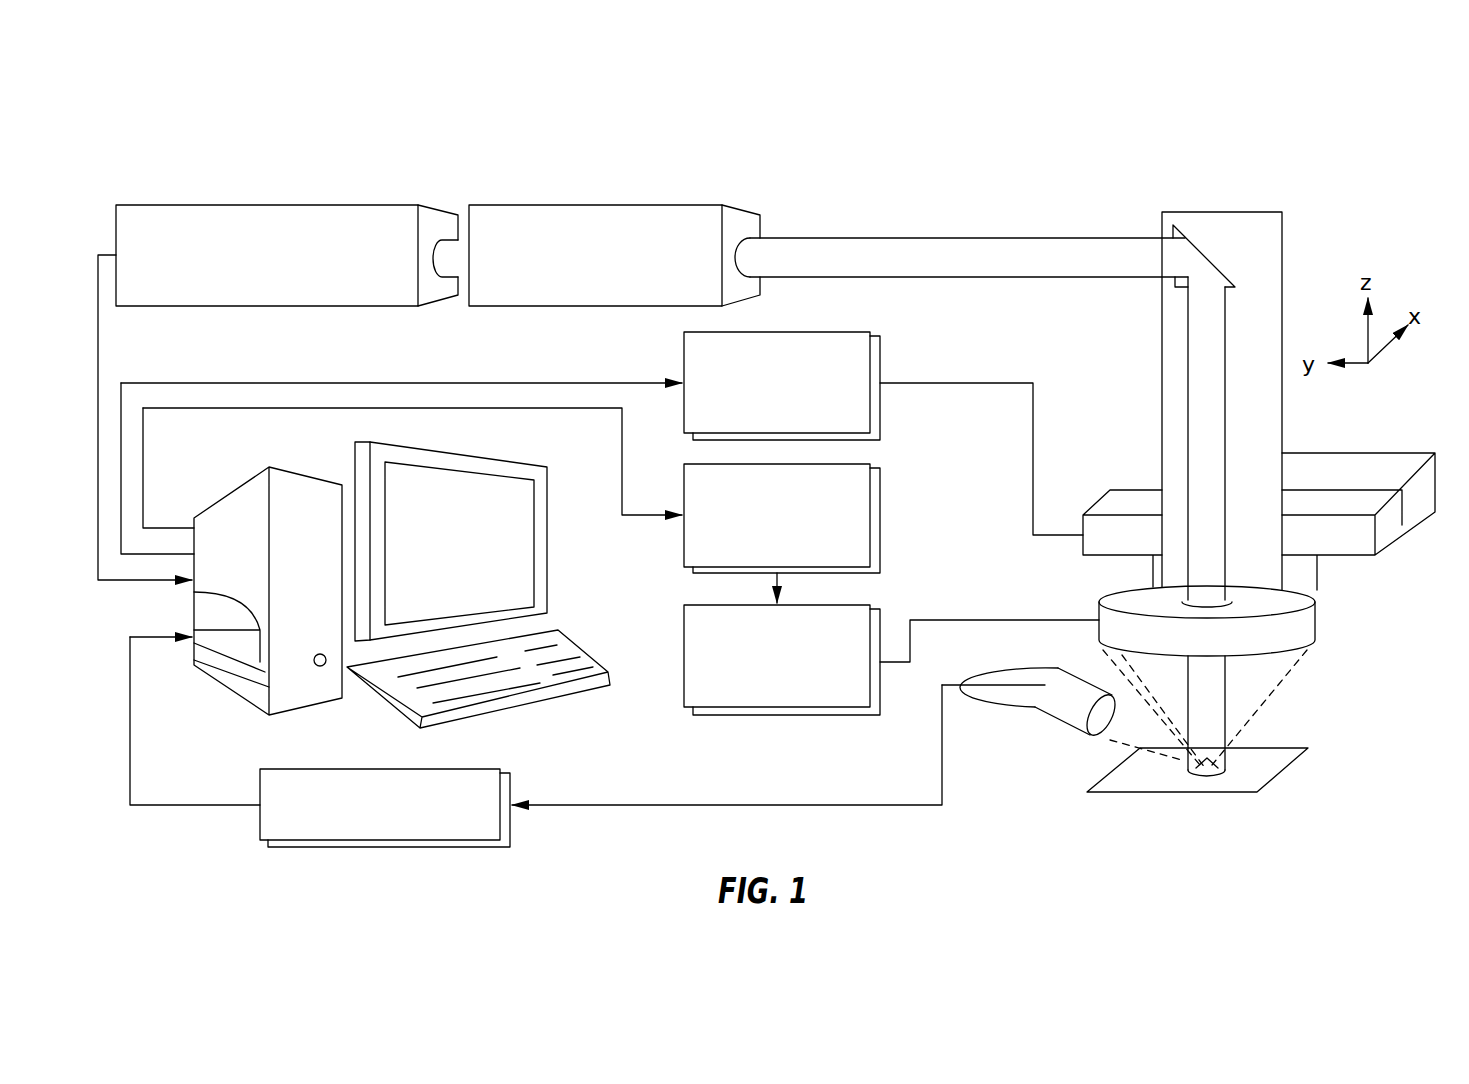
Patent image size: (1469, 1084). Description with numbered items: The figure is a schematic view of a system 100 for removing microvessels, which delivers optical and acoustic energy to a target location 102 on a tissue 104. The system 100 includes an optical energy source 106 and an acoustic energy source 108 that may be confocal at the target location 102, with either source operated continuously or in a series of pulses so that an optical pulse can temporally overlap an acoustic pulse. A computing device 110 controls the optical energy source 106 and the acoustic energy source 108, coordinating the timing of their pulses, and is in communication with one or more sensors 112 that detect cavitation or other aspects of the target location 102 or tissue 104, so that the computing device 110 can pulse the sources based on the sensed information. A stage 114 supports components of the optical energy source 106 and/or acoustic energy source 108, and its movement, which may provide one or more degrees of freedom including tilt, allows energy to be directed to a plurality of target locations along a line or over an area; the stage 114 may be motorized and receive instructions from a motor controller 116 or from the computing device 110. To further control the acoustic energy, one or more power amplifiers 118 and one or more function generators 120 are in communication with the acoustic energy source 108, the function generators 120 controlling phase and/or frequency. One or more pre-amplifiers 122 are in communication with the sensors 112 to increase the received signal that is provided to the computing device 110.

The system for removing microvessels 100 is at (1400, 148).
The target location 102 is at (1212, 772).
The tissue 104 is at (1128, 794).
The optical energy source 106 is at (287, 272).
The acoustic energy source 108 is at (1317, 620).
The computing device 110 is at (249, 565).
The sensor 112 is at (1063, 708).
The stage 114 is at (1337, 505).
The motor controller 116 is at (797, 400).
The power amplifier 118 is at (797, 672).
The function generator 120 is at (797, 532).
The pre-amplifier 122 is at (400, 822).